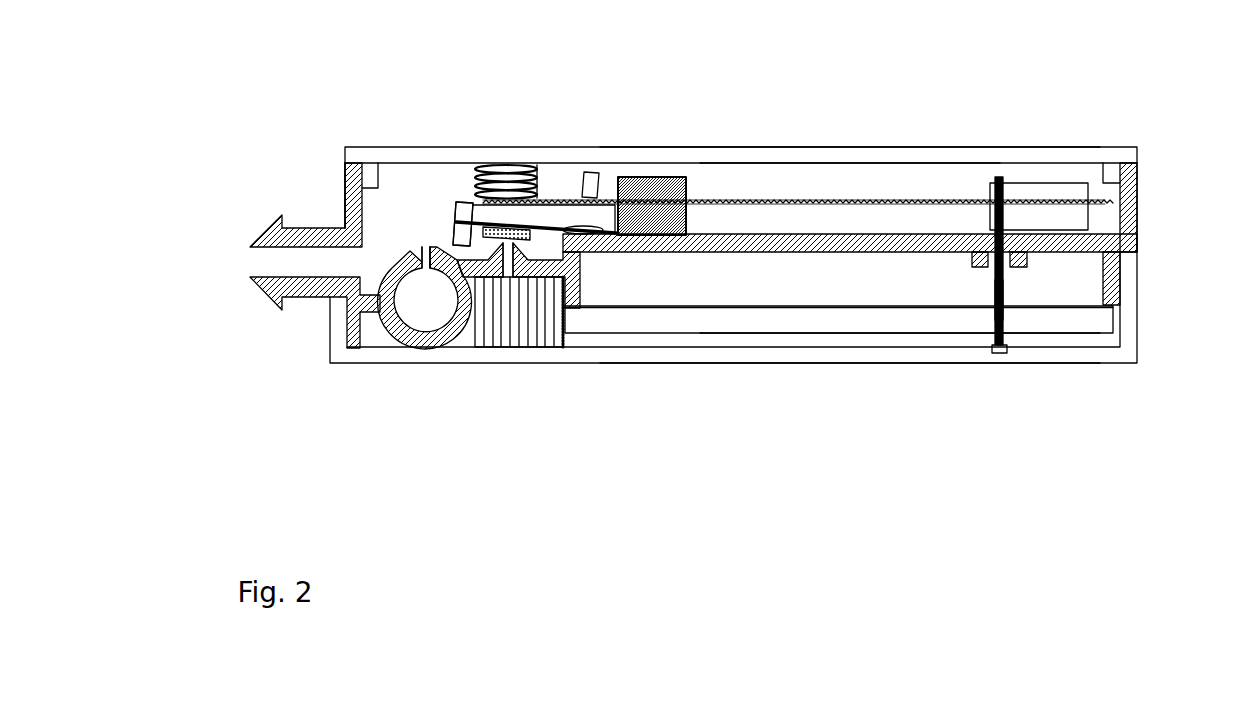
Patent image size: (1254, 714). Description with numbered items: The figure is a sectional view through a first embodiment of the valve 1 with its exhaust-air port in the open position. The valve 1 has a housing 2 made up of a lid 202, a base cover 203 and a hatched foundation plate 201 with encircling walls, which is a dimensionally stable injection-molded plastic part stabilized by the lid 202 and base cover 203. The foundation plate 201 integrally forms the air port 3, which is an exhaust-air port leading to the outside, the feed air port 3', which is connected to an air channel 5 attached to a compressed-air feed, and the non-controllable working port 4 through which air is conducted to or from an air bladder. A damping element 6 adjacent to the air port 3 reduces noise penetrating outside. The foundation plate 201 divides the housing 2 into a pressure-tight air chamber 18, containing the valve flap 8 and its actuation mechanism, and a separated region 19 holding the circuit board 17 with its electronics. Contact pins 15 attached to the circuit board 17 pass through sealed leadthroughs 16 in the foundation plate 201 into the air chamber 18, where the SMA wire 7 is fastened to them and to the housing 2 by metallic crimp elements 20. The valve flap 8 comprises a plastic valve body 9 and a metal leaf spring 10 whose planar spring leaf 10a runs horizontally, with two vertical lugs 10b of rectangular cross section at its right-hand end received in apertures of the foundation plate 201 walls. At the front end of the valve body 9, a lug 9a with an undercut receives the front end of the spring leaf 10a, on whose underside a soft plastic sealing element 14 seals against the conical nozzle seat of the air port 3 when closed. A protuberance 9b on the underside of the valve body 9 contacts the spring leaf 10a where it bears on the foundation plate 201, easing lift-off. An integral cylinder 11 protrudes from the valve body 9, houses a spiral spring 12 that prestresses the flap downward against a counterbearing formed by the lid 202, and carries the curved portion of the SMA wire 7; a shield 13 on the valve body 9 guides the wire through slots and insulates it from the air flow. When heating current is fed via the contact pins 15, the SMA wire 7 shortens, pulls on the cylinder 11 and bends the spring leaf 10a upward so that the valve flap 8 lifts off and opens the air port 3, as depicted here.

The valve 1 is at (1137, 99).
The housing 2 is at (1140, 190).
The air port 3 is at (521, 327).
The air port 3' is at (418, 228).
The working port 4 is at (248, 258).
The air channel 5 is at (420, 317).
The damping element 6 is at (497, 340).
The SMA wire 7 is at (815, 203).
The valve flap 8 is at (563, 181).
The valve body 9 is at (472, 212).
The lug 9a is at (470, 250).
The protuberance 9b is at (593, 235).
The leaf spring 10 is at (670, 177).
The spring leaf 10a is at (468, 210).
The lugs 10b is at (633, 177).
The cylinder 11 is at (503, 165).
The spiral spring 12 is at (537, 165).
The shield 13 is at (588, 172).
The sealing element 14 is at (513, 243).
The contact pins 15 is at (1007, 293).
The sealed leadthroughs 16 is at (1005, 222).
The circuit board 17 is at (942, 333).
The air chamber 18 is at (843, 170).
The region 19 is at (742, 298).
The crimp elements 20 is at (1083, 183).
The foundation plate 201 is at (830, 245).
The lid 202 is at (893, 147).
The base cover 203 is at (840, 362).